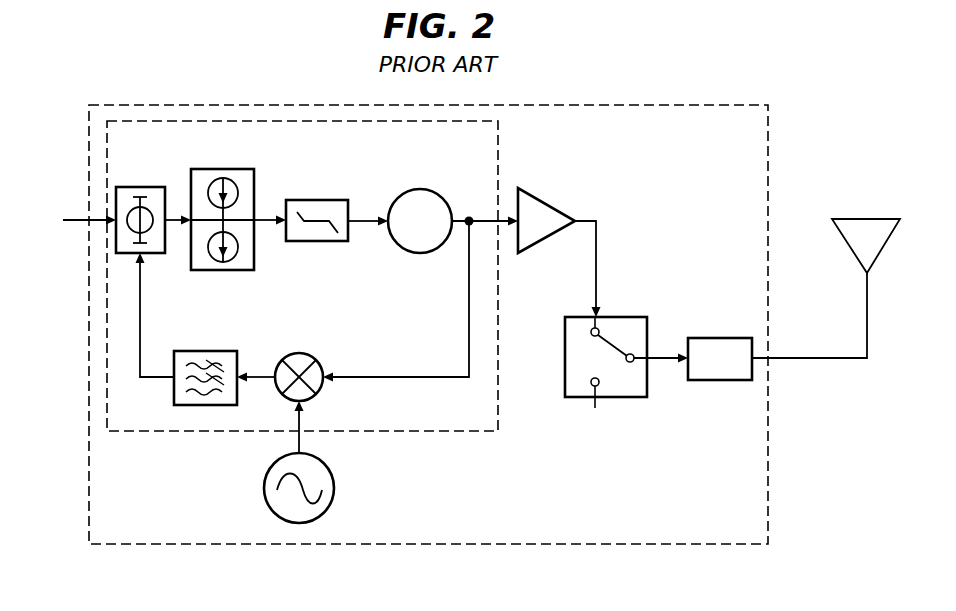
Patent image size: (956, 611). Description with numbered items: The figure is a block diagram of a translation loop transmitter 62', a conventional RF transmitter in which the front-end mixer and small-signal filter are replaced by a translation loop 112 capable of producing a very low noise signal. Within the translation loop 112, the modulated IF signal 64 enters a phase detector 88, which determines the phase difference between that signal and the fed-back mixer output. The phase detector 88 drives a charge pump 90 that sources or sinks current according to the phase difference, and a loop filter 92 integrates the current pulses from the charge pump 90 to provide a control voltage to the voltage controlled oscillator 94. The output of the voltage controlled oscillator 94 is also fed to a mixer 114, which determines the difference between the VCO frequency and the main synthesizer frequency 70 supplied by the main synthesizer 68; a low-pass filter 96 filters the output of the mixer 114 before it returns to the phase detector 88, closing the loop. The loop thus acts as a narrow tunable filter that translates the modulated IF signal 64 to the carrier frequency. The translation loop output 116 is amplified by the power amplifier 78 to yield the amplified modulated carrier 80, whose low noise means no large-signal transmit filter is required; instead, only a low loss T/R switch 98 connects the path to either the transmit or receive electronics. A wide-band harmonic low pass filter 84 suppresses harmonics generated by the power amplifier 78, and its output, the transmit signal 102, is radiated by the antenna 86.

The translation loop transmitter 62' is at (428, 324).
The translation loop 112 is at (155, 418).
The modulated IF signal 64 is at (56, 231).
The phase detector 88 is at (158, 187).
The charge pump 90 is at (229, 169).
The loop filter 92 is at (318, 200).
The voltage controlled oscillator 94 is at (418, 189).
The translation loop output 116 is at (462, 215).
The power amplifier 78 is at (552, 203).
The amplified modulated carrier 80 is at (596, 264).
The T/R switch 98 is at (620, 397).
The harmonic low pass filter 84 is at (700, 338).
The transmit signal 102 is at (866, 305).
The antenna 86 is at (850, 254).
The low-pass filter 96 is at (220, 351).
The mixer 114 is at (313, 357).
The main synthesizer frequency 70 is at (299, 442).
The main synthesizer 68 is at (264, 488).